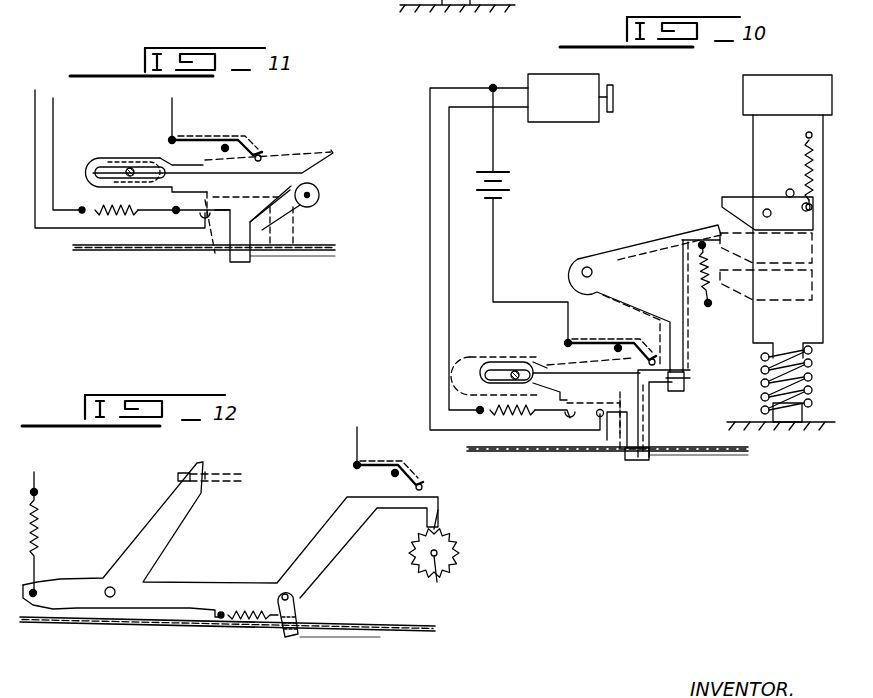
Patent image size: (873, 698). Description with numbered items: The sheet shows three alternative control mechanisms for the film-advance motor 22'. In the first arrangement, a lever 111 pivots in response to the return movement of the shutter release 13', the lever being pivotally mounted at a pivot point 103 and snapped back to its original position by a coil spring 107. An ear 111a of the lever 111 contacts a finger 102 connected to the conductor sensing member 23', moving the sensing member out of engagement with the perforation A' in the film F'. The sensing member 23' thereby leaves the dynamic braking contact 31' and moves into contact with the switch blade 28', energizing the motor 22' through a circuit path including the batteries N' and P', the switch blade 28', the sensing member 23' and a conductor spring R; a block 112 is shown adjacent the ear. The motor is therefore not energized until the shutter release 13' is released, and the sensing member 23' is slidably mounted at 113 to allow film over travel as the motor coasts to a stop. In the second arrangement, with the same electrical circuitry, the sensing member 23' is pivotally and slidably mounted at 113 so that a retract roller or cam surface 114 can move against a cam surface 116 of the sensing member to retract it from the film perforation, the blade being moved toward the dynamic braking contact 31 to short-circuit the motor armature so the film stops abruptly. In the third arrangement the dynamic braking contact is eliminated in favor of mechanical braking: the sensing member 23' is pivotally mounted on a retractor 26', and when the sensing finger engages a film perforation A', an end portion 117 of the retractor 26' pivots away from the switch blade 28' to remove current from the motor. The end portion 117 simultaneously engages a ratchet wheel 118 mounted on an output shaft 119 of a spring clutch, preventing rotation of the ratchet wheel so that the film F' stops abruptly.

In FIG. 11, the slidable mounting 113 is at (100, 170).
In FIG. 10, the slidable mounting 113 is at (496, 374).
In FIG. 11, the switch blade 28' is at (232, 137).
In FIG. 10, the switch blade 28' is at (611, 365).
In FIG. 12, the switch blade 28' is at (409, 458).
In FIG. 11, the retract roller or cam surface 114 is at (318, 190).
In FIG. 11, the cam surface 116 is at (292, 201).
In FIG. 11, the dynamic braking contact 31 is at (207, 238).
In FIG. 11, the sensing member 23' is at (254, 242).
In FIG. 10, the sensing member 23' is at (657, 431).
In FIG. 12, the sensing member 23' is at (313, 613).
In FIG. 11, the film perforation A' is at (295, 269).
In FIG. 10, the film perforation A' is at (699, 470).
In FIG. 12, the film perforation A' is at (323, 654).
In FIG. 11, the film F' is at (204, 266).
In FIG. 10, the film F' is at (607, 468).
In FIG. 12, the film F' is at (227, 648).
In FIG. 10, the motor 22' is at (571, 114).
In FIG. 10, the battery N' is at (517, 134).
In FIG. 10, the battery P' is at (522, 261).
In FIG. 10, the shutter release 13' is at (764, 95).
In FIG. 10, the coil spring 107 is at (803, 156).
In FIG. 10, the pivot point 103 is at (763, 210).
In FIG. 10, the finger 102 is at (722, 203).
In FIG. 10, the lever 111 is at (622, 266).
In FIG. 10, the stop block 112 is at (686, 380).
In FIG. 10, the ear 111a is at (672, 392).
In FIG. 10, the conductor spring R is at (525, 415).
In FIG. 10, the dynamic braking contact 31' is at (607, 435).
In FIG. 12, the end portion 117 is at (436, 506).
In FIG. 12, the ratchet wheel 118 is at (445, 556).
In FIG. 12, the output shaft 119 is at (440, 578).
In FIG. 12, the retractor 26' is at (230, 569).